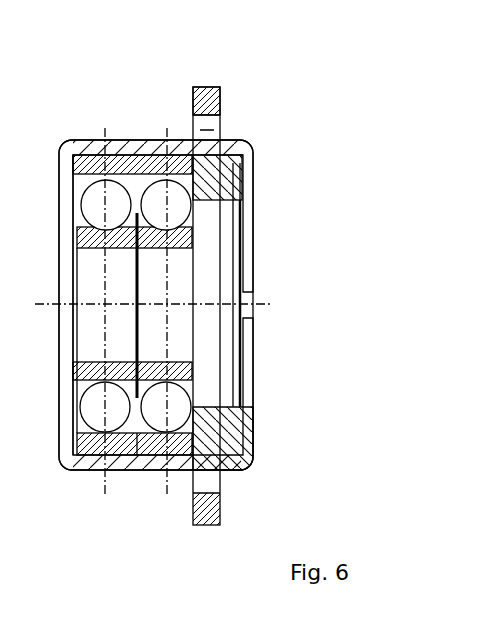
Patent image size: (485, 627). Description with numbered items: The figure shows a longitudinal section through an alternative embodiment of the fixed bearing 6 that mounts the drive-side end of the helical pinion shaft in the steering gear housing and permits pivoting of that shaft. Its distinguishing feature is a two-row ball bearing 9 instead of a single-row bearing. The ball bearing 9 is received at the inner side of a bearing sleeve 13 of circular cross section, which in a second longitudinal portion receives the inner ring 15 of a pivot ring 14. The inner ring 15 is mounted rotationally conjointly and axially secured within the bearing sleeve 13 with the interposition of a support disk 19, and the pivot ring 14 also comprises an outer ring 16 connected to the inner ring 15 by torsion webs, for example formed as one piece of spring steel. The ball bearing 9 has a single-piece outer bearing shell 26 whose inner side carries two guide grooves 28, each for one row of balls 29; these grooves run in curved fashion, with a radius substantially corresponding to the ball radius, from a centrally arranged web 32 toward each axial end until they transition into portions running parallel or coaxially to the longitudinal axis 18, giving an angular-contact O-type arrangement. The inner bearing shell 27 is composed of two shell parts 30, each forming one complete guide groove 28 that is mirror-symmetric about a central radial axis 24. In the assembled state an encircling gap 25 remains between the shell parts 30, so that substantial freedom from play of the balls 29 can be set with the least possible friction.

The fixed bearing 6 is at (66, 100).
The ball bearing 9 is at (66, 180).
The bearing sleeve 13 is at (147, 140).
The pivot ring 14 is at (222, 91).
The inner ring 15 is at (213, 182).
The outer ring 16 is at (208, 100).
The longitudinal axis 18 is at (276, 302).
The support disk 19 is at (247, 457).
The radial axis 24 is at (167, 498).
The encircling gap 25 is at (131, 285).
The outer bearing shell 26 is at (118, 445).
The inner bearing shell 27 is at (72, 383).
The guide grooves 28 is at (144, 176).
The balls 29 is at (157, 213).
The shell parts 30 is at (133, 373).
The web 32 is at (138, 436).